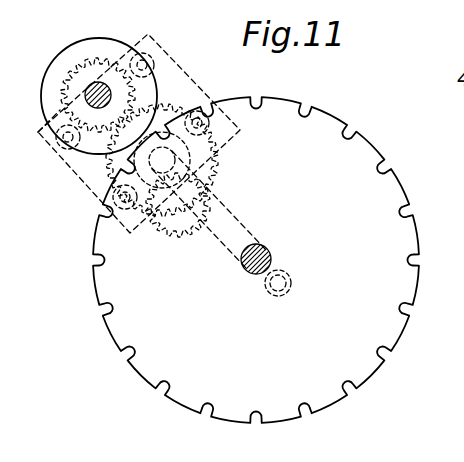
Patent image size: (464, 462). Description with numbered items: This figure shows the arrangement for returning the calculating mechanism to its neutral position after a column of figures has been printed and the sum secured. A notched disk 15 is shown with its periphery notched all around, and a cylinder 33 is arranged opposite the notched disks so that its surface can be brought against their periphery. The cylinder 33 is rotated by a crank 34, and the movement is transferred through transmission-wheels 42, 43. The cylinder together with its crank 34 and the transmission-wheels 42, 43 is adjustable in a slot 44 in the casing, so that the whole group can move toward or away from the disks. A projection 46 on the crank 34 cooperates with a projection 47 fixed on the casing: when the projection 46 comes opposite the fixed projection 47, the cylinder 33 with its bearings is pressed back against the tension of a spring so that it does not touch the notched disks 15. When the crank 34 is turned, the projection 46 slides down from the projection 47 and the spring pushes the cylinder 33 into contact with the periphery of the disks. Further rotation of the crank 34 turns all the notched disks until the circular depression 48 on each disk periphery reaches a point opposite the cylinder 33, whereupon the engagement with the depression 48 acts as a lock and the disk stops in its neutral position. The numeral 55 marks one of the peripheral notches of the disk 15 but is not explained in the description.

The notched disk 15 is at (55, 30).
The cylinder 33 is at (108, 42).
The crank 34 is at (248, 234).
The transmission-wheel 42 is at (222, 162).
The transmission-wheel 43 is at (38, 114).
The slot 44 is at (139, 134).
The projection 46 is at (172, 220).
The projection 47 is at (208, 238).
The circular depression 48 is at (150, 130).
The notch 55 is at (413, 312).